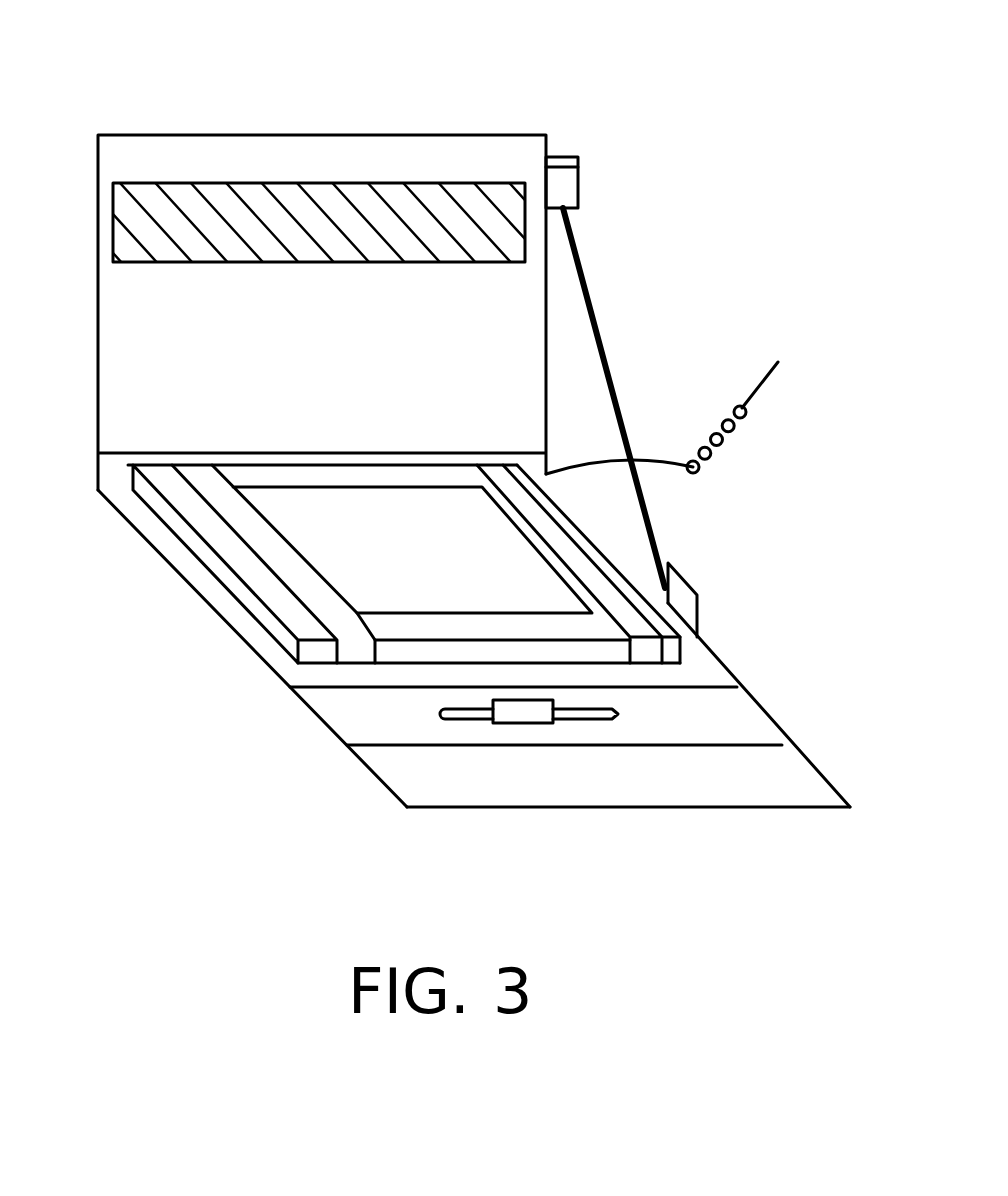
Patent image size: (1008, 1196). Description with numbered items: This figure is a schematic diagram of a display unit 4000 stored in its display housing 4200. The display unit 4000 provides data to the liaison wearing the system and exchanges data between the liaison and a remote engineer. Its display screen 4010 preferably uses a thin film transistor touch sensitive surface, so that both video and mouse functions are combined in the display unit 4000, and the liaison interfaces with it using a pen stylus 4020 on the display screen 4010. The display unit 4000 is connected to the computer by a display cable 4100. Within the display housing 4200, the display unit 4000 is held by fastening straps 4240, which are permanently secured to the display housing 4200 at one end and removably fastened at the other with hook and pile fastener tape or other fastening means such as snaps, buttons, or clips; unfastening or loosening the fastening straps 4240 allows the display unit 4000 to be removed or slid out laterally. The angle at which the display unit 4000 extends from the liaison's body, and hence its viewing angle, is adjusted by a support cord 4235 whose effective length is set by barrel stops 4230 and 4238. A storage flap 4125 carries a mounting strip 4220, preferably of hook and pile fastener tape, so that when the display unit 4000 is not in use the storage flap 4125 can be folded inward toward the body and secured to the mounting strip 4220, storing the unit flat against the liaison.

The display unit 4000 is at (197, 557).
The display screen 4010 is at (383, 490).
The pen stylus 4020 is at (620, 714).
The display cable 4100 is at (725, 441).
The storage flap 4125 is at (373, 777).
The display housing 4200 is at (410, 135).
The mounting strip 4220 is at (247, 263).
The barrel stop 4230 is at (578, 178).
The support cord 4235 is at (596, 318).
The barrel stop 4238 is at (697, 607).
The fastening straps 4240 is at (298, 573).